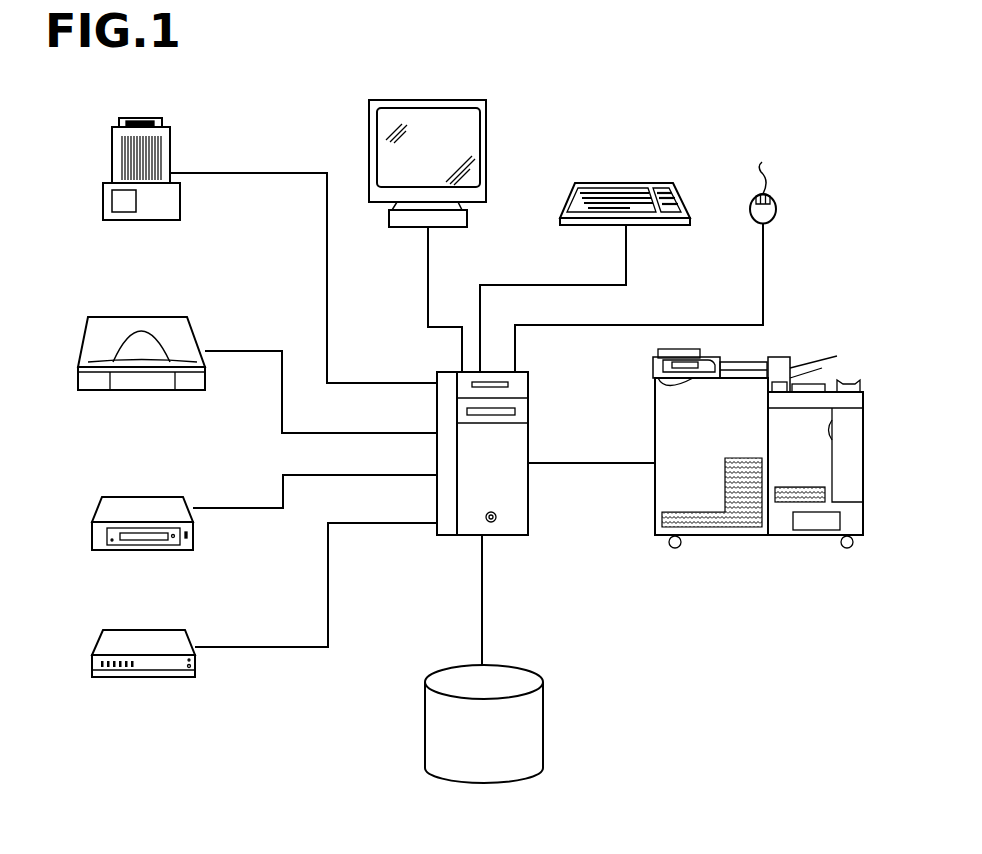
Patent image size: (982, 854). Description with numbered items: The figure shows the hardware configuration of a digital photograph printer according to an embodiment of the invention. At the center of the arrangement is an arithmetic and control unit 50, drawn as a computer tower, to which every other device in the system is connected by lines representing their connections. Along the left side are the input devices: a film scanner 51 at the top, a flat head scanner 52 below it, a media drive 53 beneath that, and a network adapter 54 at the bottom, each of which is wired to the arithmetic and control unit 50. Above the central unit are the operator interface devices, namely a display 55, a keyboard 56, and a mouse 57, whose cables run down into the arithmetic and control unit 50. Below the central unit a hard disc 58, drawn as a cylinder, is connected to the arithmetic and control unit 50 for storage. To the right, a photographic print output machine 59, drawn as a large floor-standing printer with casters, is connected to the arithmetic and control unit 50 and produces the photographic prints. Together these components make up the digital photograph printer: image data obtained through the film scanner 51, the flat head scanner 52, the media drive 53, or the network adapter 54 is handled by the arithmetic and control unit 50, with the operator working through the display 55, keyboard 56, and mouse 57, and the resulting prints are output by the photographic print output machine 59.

The arithmetic and control unit 50 is at (528, 405).
The film scanner 51 is at (170, 133).
The flat head scanner 52 is at (167, 317).
The media drive 53 is at (168, 497).
The network adapter 54 is at (170, 630).
The display 55 is at (486, 120).
The keyboard 56 is at (665, 183).
The mouse 57 is at (776, 205).
The hard disc 58 is at (543, 710).
The photographic print output machine 59 is at (773, 357).